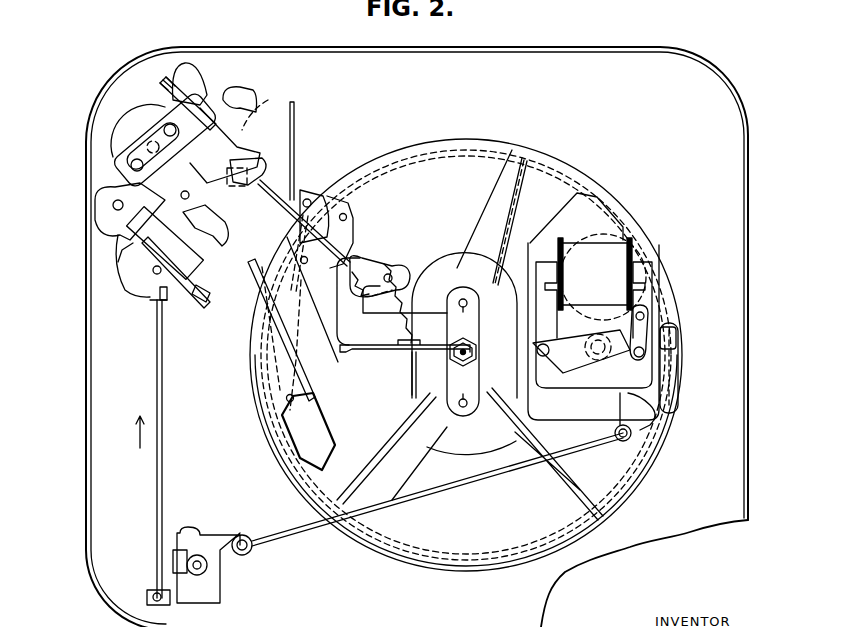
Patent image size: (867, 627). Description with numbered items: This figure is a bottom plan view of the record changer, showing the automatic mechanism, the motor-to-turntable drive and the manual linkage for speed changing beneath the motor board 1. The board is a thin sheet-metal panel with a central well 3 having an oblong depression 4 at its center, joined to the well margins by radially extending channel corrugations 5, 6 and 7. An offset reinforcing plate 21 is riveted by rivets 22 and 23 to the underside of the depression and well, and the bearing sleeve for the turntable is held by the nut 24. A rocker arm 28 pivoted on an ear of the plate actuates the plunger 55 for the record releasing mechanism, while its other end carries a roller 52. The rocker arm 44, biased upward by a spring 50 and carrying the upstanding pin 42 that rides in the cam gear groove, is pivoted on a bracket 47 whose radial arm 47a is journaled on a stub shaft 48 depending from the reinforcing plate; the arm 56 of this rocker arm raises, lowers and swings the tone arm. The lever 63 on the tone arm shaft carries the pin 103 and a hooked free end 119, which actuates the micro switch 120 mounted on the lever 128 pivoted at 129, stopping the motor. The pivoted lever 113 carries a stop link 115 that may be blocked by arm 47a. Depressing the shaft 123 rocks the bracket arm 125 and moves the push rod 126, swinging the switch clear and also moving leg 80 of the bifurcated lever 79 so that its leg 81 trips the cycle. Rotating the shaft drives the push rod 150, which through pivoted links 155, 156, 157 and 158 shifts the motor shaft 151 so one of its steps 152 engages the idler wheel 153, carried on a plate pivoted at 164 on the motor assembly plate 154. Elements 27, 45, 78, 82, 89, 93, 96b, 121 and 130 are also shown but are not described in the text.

The motor board 1 is at (751, 163).
The central well 3 is at (402, 558).
The oblong depression 4 is at (448, 452).
The channel corrugation 5 is at (496, 210).
The channel corrugation 6 is at (566, 470).
The channel corrugation 7 is at (360, 477).
The reinforcing plate 21 is at (490, 380).
The rivet 22 is at (458, 353).
The rivet 23 is at (301, 259).
The nut 24 is at (483, 333).
The bar 27 is at (404, 355).
The rocker arm 28 is at (410, 385).
The upstanding pin 42 is at (397, 268).
The rocker arm 44 is at (300, 237).
The toothed segment 45 is at (380, 270).
The bracket 47 is at (350, 205).
The radially extending arm 47a is at (296, 122).
The stub shaft 48 is at (307, 192).
The spring 50 is at (398, 327).
The roller 52 is at (344, 352).
The plunger 55 is at (478, 348).
The arm 56 is at (243, 185).
The lever 63 is at (100, 139).
The connector 78 is at (152, 304).
The bifurcated lever 79 is at (305, 447).
The leg 80 is at (252, 268).
The leg 81 is at (305, 320).
The pivot hole 82 is at (286, 400).
The lever 89 is at (266, 166).
The lobe 93 is at (253, 107).
The lever 96b is at (198, 6).
The upstanding pin 103 is at (183, 192).
The pivoted lever 113 is at (213, 92).
The stop link 115 is at (160, 88).
The hooked free end portion 119 is at (222, 243).
The micro switch 120 is at (130, 246).
The bracket 121 is at (125, 282).
The shaft 123 is at (210, 568).
The bracket arm 125 is at (196, 597).
The push rod 126 is at (156, 471).
The switch carrying lever 128 is at (204, 290).
The pivot 129 is at (113, 206).
The tab 130 is at (212, 273).
The push rod 150 is at (427, 497).
The motor shaft 151 is at (588, 390).
The steps 152 is at (604, 358).
The idler wheel 153 is at (628, 228).
The assembly plate 154 is at (600, 212).
The pivoted link 155 is at (648, 427).
The pivoted link 156 is at (678, 365).
The pivoted link 157 is at (677, 332).
The pivoted link 158 is at (650, 325).
The pivot 164 is at (565, 338).